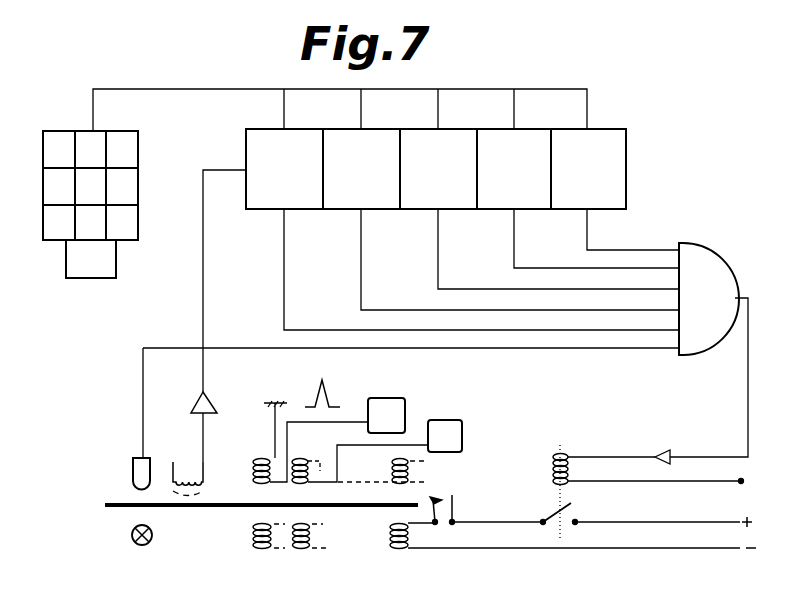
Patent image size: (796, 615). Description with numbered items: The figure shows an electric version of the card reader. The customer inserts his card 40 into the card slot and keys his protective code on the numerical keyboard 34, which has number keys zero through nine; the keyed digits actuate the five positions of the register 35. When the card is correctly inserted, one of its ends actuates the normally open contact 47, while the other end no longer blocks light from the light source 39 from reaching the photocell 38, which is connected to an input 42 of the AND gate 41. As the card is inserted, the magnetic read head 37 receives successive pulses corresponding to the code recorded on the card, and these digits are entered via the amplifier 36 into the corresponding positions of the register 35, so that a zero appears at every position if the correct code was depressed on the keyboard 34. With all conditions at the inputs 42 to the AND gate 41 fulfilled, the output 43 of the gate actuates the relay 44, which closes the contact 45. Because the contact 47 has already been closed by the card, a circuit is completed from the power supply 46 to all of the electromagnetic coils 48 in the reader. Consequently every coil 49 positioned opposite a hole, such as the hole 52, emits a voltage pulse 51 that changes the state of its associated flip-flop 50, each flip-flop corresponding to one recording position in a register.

The numerical keyboard 34 is at (68, 130).
The register 35 is at (597, 128).
The amplifier 36 is at (219, 414).
The magnetic read head 37 is at (206, 477).
The photocell 38 is at (123, 474).
The light source 39 is at (125, 547).
The card 40 is at (105, 505).
The AND gate 41 is at (709, 287).
The input 42 is at (633, 229).
The output 43 is at (704, 358).
The relay 44 is at (648, 449).
The contact 45 is at (641, 512).
The power supply 46 is at (732, 548).
The normally open contact 47 is at (486, 537).
The electromagnetic coil 48 is at (493, 559).
The coil 49 is at (335, 442).
The flip-flop 50 is at (416, 409).
The voltage pulse 51 is at (335, 384).
The hole 52 is at (256, 507).